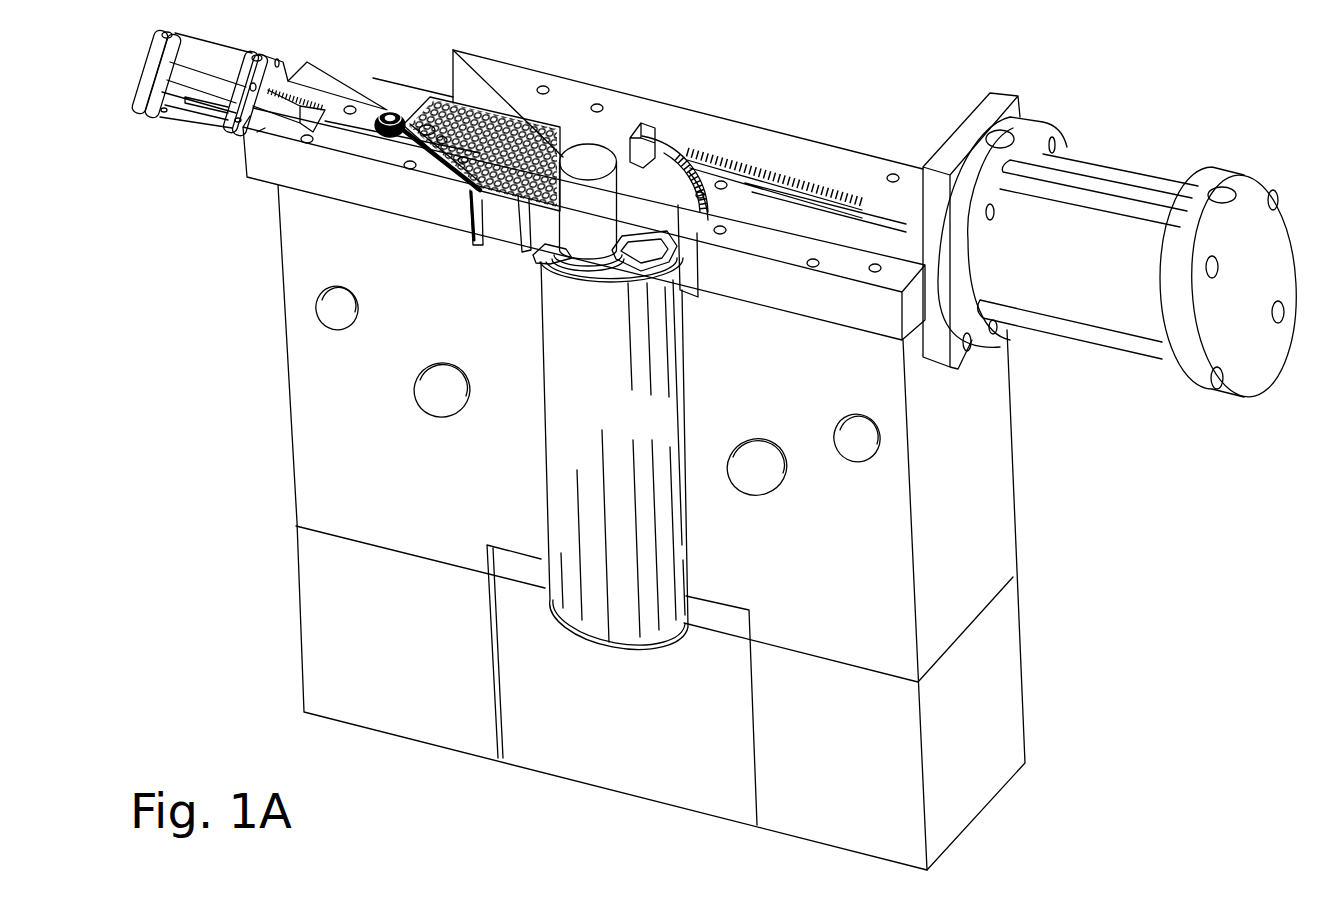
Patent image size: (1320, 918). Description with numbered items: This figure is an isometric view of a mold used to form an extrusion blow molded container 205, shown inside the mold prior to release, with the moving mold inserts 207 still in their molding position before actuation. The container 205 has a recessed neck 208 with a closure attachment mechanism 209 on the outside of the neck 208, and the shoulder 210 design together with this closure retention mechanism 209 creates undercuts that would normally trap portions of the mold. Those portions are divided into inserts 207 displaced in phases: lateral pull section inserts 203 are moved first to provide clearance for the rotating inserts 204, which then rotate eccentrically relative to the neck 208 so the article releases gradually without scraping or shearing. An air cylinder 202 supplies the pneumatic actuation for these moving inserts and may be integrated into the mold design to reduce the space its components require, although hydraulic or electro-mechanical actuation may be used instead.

The air cylinder 202 is at (175, 63).
The lateral pull section insert 203 is at (506, 140).
The rotating insert 204 is at (648, 203).
The container 205 is at (565, 478).
The moving mold insert 207 is at (550, 150).
The neck 208 is at (548, 260).
The closure attachment mechanism 209 is at (575, 258).
The shoulder 210 is at (645, 262).